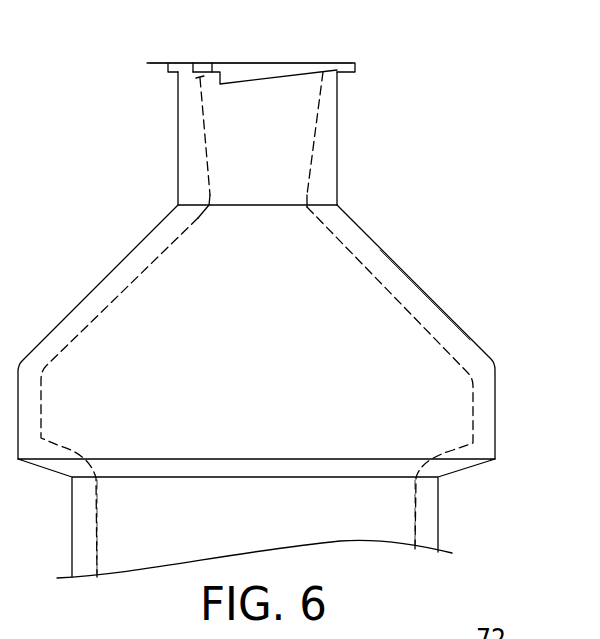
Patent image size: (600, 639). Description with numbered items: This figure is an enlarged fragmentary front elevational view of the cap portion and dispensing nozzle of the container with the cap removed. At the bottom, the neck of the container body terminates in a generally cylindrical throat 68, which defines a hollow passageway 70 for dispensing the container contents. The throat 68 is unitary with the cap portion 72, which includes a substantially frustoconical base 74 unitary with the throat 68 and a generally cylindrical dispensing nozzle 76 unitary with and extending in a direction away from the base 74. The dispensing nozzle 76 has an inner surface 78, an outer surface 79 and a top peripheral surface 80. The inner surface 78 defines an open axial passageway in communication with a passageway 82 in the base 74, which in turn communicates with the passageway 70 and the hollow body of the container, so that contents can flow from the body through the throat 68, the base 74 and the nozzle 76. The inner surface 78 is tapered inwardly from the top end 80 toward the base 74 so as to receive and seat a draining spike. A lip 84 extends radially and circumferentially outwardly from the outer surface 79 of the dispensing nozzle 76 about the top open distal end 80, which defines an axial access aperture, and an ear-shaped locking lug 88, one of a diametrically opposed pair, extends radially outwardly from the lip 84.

The throat 68 is at (438, 505).
The hollow passageway 70 is at (413, 503).
The cap portion 72 is at (397, 268).
The frustoconical base 74 is at (443, 317).
The dispensing nozzle 76 is at (338, 130).
The inner surface 78 is at (313, 135).
The outer surface 79 is at (338, 89).
The top peripheral surface 80 is at (303, 63).
The passageway 82 is at (410, 312).
The lip 84 is at (211, 62).
The locking lug 88 is at (242, 73).